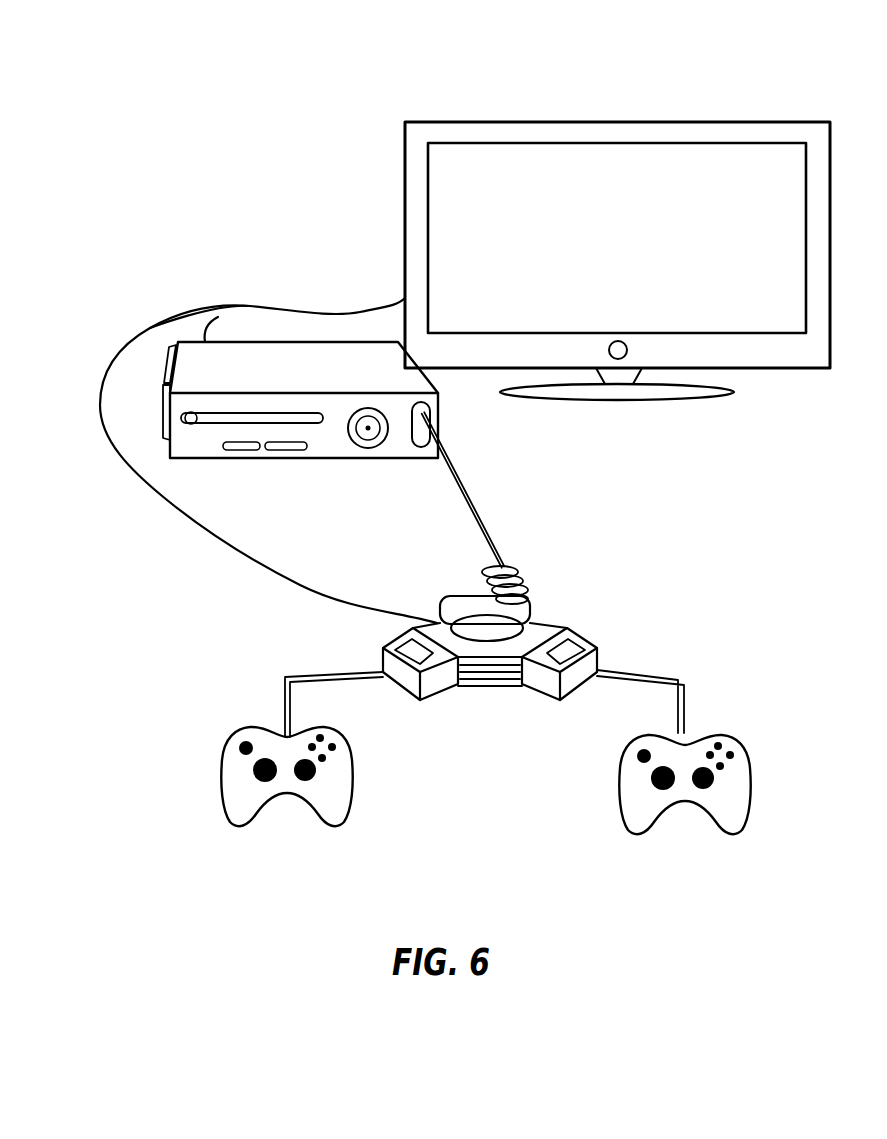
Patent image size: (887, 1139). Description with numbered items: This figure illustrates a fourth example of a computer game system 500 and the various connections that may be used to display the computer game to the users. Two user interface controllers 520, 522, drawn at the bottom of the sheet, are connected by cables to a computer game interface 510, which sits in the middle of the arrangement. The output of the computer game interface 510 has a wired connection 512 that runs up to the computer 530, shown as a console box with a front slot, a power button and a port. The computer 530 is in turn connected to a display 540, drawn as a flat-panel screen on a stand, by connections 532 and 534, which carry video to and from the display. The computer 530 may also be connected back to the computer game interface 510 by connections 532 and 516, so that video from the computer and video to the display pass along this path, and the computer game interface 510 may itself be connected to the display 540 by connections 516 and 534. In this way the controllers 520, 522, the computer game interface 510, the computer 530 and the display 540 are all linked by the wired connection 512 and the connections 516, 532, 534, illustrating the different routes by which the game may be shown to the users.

The computer game system 500 is at (226, 50).
The computer game interface 510 is at (528, 628).
The wired connection 512 is at (477, 508).
The connection 516 is at (117, 453).
The user interface controller 520 is at (220, 786).
The user interface controller 522 is at (742, 782).
The computer 530 is at (353, 460).
The connection 532 is at (206, 334).
The connection 534 is at (250, 310).
The display 540 is at (405, 188).